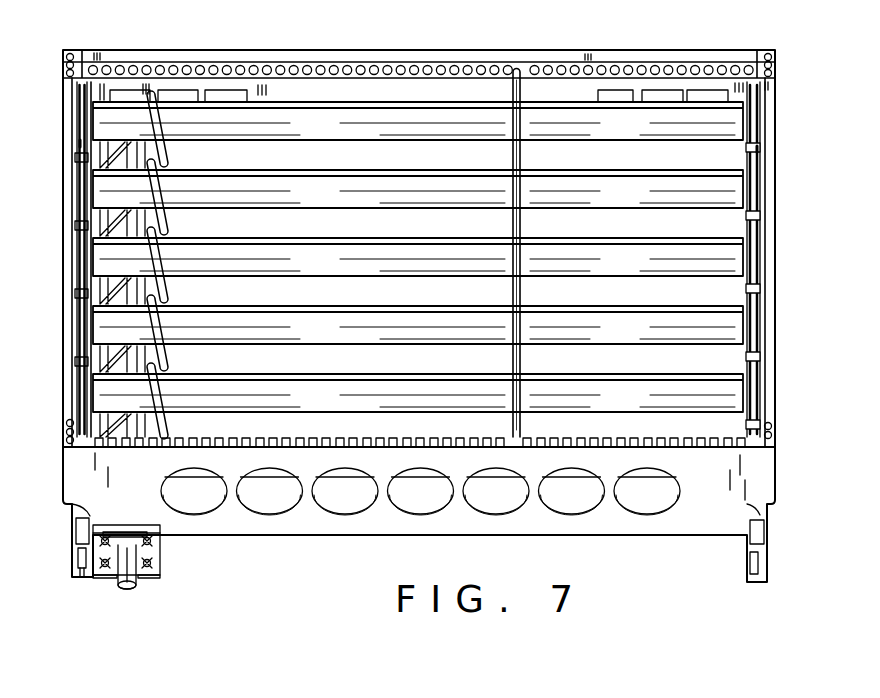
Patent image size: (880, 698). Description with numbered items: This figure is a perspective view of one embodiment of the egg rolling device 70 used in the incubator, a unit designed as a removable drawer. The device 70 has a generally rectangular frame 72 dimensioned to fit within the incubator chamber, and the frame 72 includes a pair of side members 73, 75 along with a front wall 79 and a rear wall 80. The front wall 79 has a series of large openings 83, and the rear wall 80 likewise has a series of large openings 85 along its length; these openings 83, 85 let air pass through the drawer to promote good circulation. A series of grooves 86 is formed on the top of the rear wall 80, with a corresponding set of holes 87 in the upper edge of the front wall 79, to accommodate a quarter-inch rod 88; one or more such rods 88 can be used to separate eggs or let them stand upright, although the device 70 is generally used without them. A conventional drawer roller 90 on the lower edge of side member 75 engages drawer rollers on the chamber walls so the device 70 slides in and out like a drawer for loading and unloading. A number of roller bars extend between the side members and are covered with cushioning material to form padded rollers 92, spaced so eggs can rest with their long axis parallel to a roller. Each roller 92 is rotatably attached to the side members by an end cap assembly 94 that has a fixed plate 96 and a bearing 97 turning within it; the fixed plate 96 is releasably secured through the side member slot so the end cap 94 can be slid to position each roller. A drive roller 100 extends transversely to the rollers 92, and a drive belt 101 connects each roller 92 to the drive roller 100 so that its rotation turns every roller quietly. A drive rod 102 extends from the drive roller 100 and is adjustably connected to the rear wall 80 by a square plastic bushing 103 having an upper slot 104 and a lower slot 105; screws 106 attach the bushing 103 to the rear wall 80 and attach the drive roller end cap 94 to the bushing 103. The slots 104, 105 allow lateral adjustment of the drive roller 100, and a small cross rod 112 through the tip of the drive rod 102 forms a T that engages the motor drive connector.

The egg rolling device 70 is at (360, 36).
The frame 72 is at (773, 107).
The side member 73 is at (772, 284).
The side member 75 is at (68, 321).
The front wall 79 is at (585, 56).
The rear wall 80 is at (707, 505).
The openings 83 is at (231, 92).
The openings 85 is at (580, 498).
The grooves 86 is at (304, 447).
The holes 87 is at (482, 63).
The rod 88 is at (603, 157).
The drawer roller 90 is at (77, 528).
The padded rollers 92 is at (300, 117).
The end cap assembly 94 is at (85, 248).
The fixed plate 96 is at (73, 103).
The bearing 97 is at (76, 143).
The drive roller 100 is at (105, 355).
The drive belt 101 is at (158, 120).
The drive rod 102 is at (126, 589).
The adjustable plastic bushing 103 is at (150, 553).
The upper slot 104 is at (76, 552).
The lower slot 105 is at (108, 578).
The screws 106 is at (153, 543).
The cross rod 112 is at (142, 578).